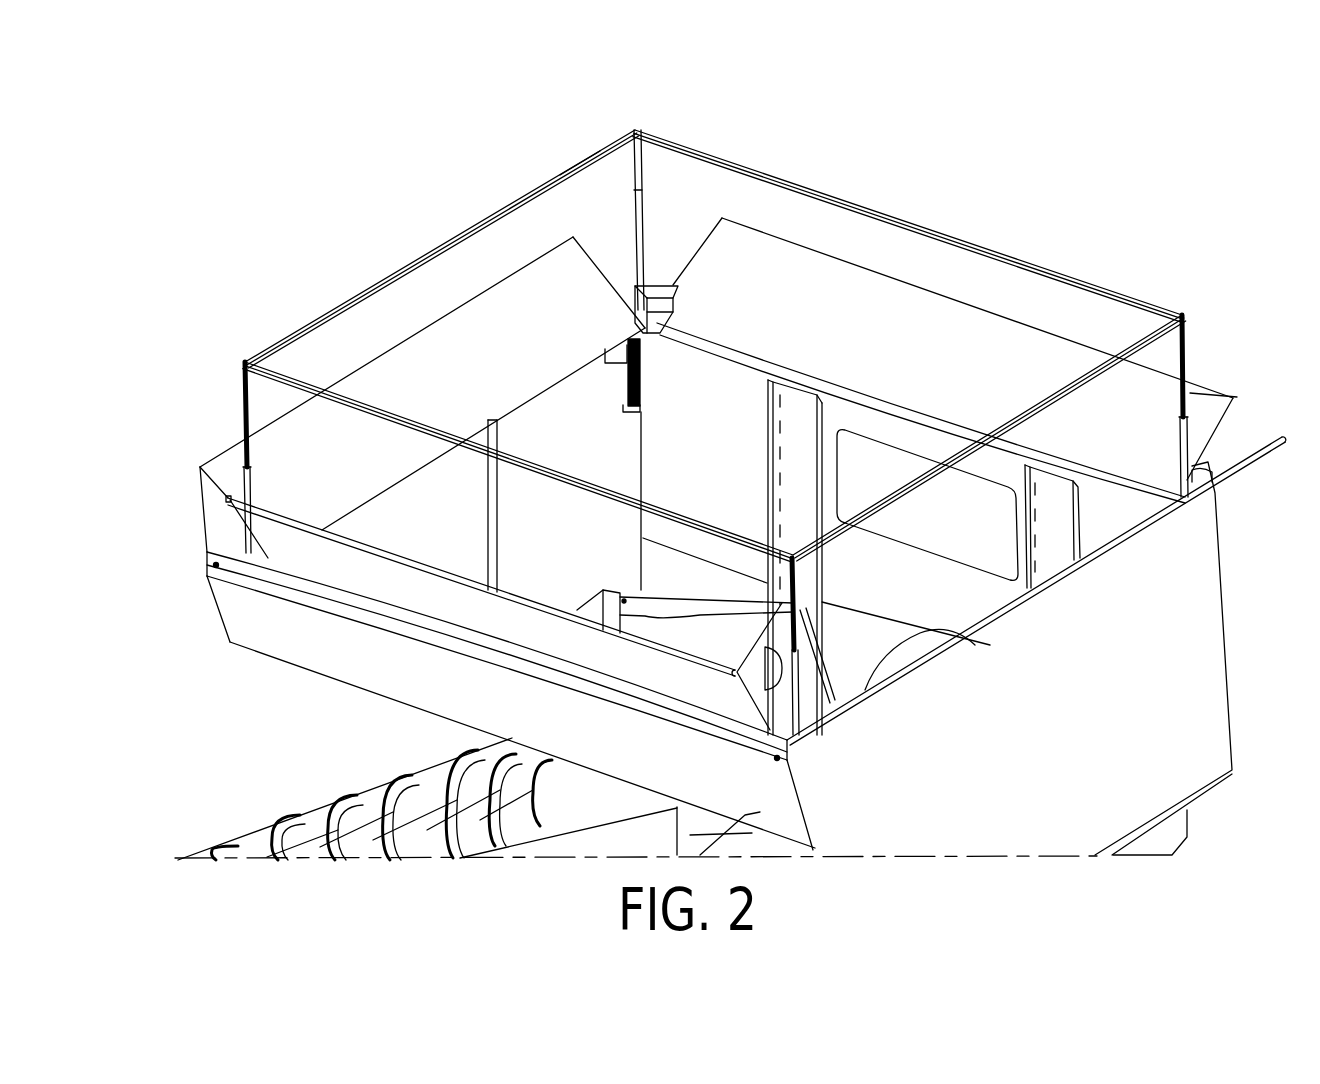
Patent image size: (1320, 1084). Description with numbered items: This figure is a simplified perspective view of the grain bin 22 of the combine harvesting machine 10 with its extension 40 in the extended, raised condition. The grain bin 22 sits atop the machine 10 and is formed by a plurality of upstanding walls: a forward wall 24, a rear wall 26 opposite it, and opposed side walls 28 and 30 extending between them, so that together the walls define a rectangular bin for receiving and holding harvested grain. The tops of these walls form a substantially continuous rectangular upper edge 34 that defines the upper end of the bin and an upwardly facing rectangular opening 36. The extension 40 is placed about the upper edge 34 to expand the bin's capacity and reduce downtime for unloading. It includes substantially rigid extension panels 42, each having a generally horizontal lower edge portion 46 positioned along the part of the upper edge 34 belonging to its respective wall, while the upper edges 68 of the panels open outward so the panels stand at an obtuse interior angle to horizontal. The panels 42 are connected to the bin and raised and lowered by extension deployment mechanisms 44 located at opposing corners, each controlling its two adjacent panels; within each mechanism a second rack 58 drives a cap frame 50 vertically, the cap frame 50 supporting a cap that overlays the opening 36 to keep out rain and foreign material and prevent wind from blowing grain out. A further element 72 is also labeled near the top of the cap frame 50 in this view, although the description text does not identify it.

The combine harvesting machine 10 is at (960, 155).
The grain bin 22 is at (340, 684).
The forward wall 24 is at (965, 828).
The rear wall 26 is at (212, 592).
The side wall 28 is at (447, 700).
The side wall 30 is at (673, 283).
The upper edge 34 is at (667, 714).
The rectangular opening 36 is at (593, 428).
The extension 40 is at (778, 163).
The extension panels 42 is at (420, 332).
The extension deployment mechanism 44 is at (661, 358).
The lower edge portion 46 is at (890, 398).
The cap frame 50 is at (593, 152).
The second rack 58 is at (640, 253).
The upper edges 68 is at (900, 282).
The connector bracket 72 is at (647, 190).